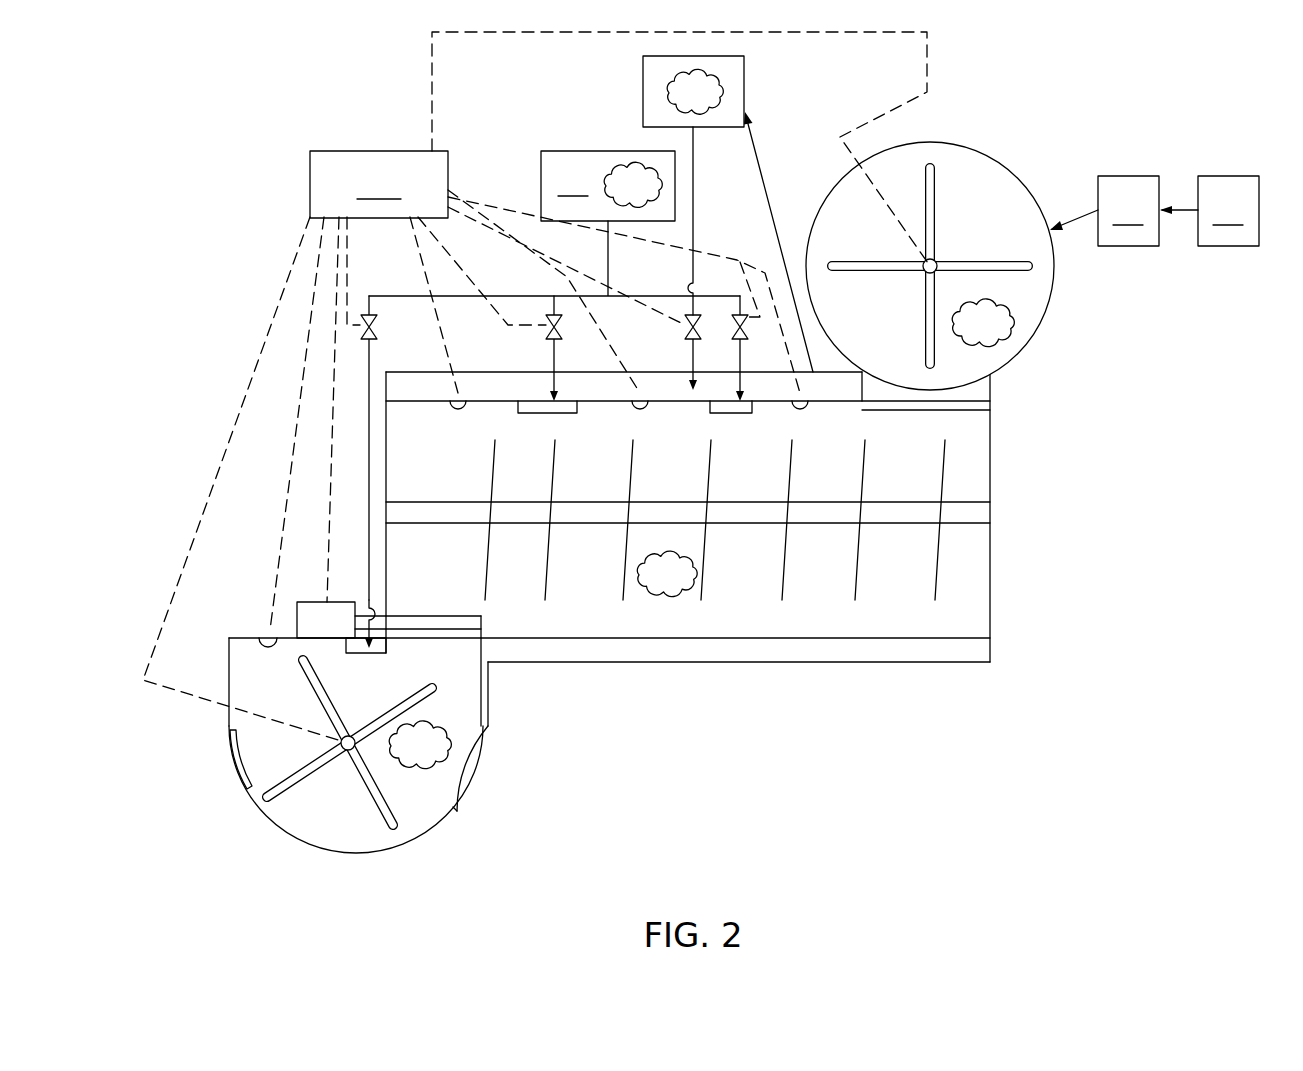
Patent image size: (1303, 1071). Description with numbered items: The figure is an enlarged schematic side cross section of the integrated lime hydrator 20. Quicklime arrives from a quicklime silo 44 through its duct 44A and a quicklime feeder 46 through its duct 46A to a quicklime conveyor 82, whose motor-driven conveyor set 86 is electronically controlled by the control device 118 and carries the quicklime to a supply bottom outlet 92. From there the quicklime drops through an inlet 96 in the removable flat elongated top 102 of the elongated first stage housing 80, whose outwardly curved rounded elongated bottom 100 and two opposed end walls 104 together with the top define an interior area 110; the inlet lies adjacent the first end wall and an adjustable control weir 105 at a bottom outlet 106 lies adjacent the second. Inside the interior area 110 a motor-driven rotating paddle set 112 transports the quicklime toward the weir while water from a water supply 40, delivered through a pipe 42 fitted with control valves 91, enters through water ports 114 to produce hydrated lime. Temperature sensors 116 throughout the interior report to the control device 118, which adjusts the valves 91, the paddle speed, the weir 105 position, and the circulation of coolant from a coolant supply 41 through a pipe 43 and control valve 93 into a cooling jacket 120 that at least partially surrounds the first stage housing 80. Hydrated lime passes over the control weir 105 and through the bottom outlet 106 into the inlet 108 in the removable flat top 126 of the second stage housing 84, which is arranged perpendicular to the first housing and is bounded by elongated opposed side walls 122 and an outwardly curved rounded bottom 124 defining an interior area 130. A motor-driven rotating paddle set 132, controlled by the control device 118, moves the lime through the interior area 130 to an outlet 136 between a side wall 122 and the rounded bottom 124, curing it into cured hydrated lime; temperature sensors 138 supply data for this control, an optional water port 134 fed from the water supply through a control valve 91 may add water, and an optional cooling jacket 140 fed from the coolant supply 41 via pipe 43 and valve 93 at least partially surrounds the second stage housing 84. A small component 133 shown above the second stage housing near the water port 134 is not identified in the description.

The integrated lime hydrator 20 is at (805, 120).
The water supply 40 is at (608, 186).
The coolant supply 41 is at (746, 64).
The pipe 42 is at (610, 270).
The pipe 43 is at (760, 162).
The quicklime silo 44 is at (1228, 211).
The duct 44A is at (1183, 214).
The quicklime feeder 46 is at (1128, 211).
The duct 46A is at (1077, 210).
The first stage housing 80 is at (995, 512).
The quicklime conveyor 82 is at (1052, 300).
The second stage housing 84 is at (500, 767).
The motor-driven conveyor set 86 is at (932, 212).
The control valves 91 is at (378, 325).
The supply bottom outlet 92 is at (985, 387).
The control valve 93 is at (697, 333).
The inlet 96 is at (984, 421).
The rounded elongated bottom 100 is at (925, 645).
The flat elongated top 102 is at (822, 409).
The end walls 104 is at (390, 484).
The adjustable control weir 105 is at (430, 623).
The bottom outlet 106 is at (470, 637).
The inlet 108 is at (452, 640).
The interior area 110 is at (985, 630).
The rotating paddle set 112 is at (705, 570).
The water port 114 is at (550, 413).
The temperature sensors 116 is at (458, 411).
The control device 118 is at (471, 447).
The cooling jacket 120 is at (652, 372).
The side walls 122 is at (229, 715).
The rounded bottom 124 is at (357, 851).
The flat top 126 is at (242, 636).
The interior area 130 is at (460, 762).
The rotating paddle set 132 is at (402, 822).
The pump 133 is at (310, 614).
The water port 134 is at (366, 654).
The outlet 136 is at (230, 760).
The temperature sensors 138 is at (268, 648).
The cooling jacket 140 is at (488, 712).